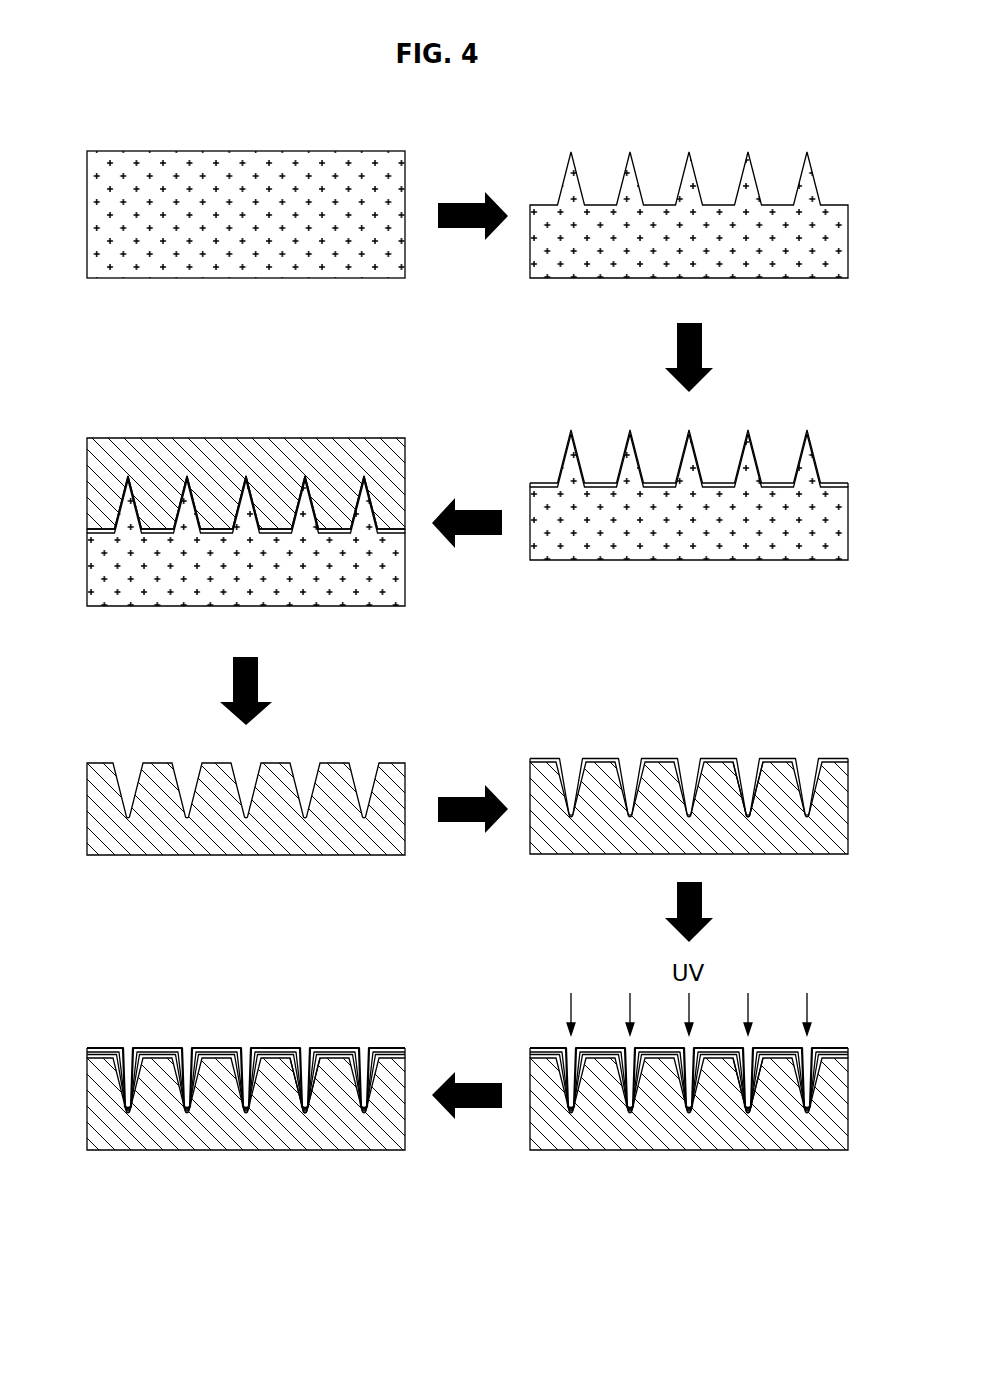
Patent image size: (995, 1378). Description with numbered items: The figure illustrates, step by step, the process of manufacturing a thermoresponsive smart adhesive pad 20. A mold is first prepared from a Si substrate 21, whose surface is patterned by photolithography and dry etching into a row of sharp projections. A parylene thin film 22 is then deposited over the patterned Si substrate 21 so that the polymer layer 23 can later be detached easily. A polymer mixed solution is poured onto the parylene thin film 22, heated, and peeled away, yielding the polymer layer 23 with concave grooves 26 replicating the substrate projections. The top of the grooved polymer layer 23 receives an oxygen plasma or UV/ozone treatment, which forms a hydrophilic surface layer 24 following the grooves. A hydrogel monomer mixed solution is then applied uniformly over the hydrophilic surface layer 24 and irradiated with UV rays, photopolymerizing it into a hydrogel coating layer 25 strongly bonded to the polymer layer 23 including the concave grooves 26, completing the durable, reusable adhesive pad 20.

The thermoresponsive smart adhesive pad 20 is at (340, 1027).
The Si substrate 21 is at (150, 150).
The parylene thin film 22 is at (562, 440).
The polymer layer 23 is at (150, 445).
The hydrophilic surface layer 24 is at (660, 760).
The hydrogel coating layer 25 is at (543, 1048).
The concave grooves 26 is at (750, 820).